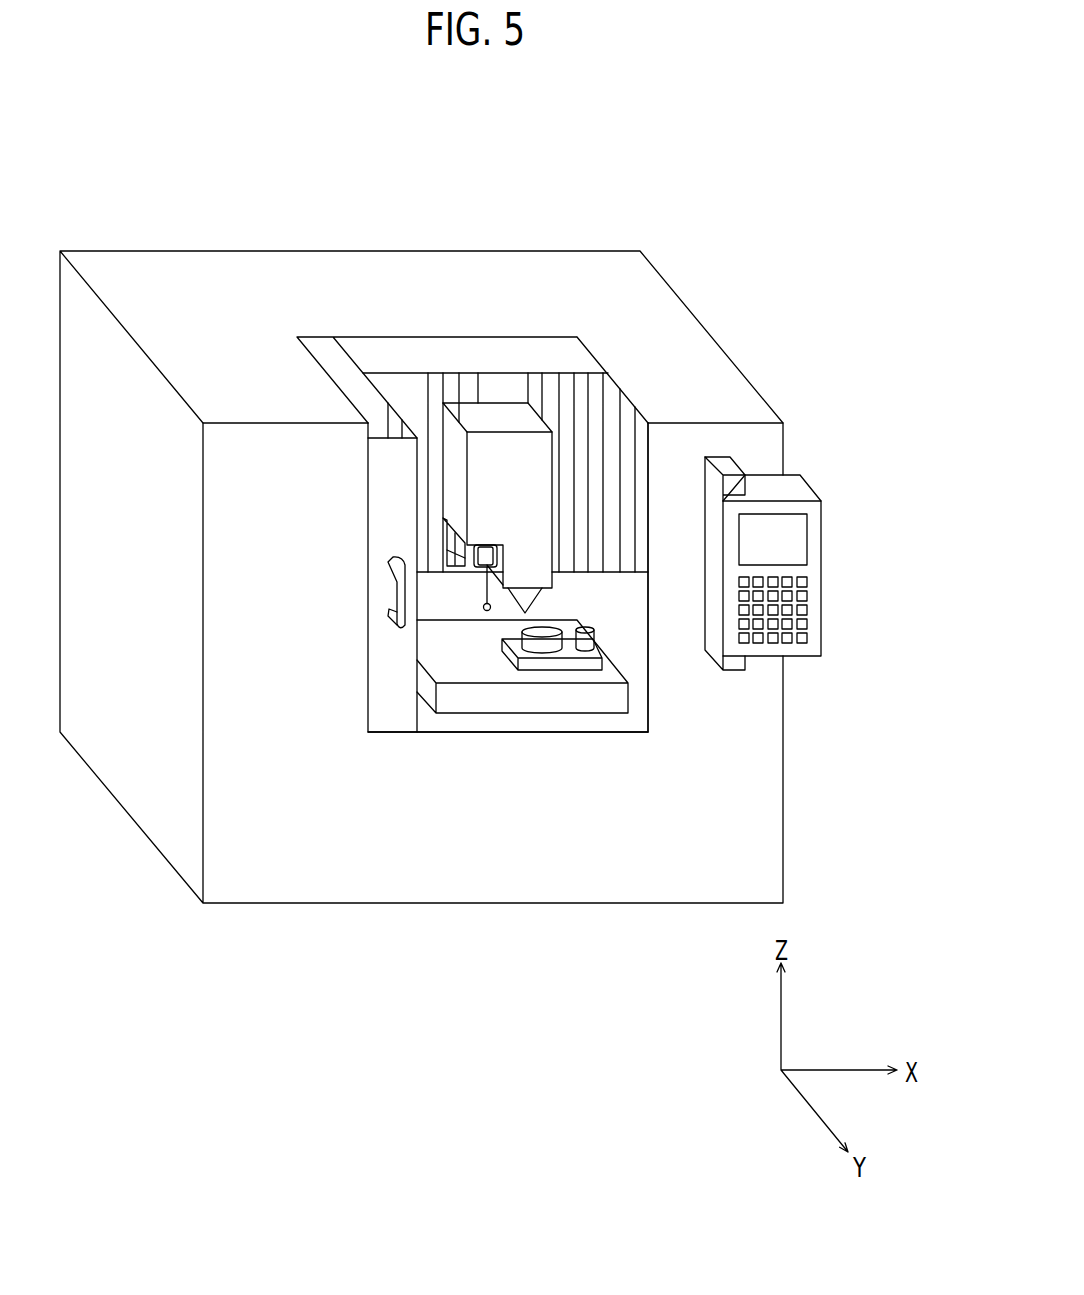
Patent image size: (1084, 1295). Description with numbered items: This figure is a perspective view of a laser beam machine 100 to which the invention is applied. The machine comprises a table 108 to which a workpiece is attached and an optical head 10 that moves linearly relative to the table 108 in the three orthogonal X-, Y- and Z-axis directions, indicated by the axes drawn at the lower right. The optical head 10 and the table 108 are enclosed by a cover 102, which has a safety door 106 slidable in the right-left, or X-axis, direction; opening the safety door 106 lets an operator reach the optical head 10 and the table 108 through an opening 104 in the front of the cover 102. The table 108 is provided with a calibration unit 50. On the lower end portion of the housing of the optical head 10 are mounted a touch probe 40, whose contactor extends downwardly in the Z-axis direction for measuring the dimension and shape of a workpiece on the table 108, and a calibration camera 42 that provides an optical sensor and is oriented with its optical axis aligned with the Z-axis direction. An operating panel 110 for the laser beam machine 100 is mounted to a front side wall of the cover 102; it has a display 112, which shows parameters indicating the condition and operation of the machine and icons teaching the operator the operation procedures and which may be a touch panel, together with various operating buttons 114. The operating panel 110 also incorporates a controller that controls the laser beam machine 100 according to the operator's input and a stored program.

The optical head 10 is at (505, 417).
The touch probe 40 is at (485, 565).
The calibration camera 42 is at (445, 546).
The calibration unit 50 is at (478, 643).
The laser beam machine 100 is at (520, 178).
The cover 102 is at (670, 285).
The opening 104 is at (647, 640).
The safety door 106 is at (393, 710).
The table 108 is at (530, 702).
The operating panel 110 is at (823, 548).
The display 112 is at (787, 532).
The operating buttons 114 is at (817, 595).